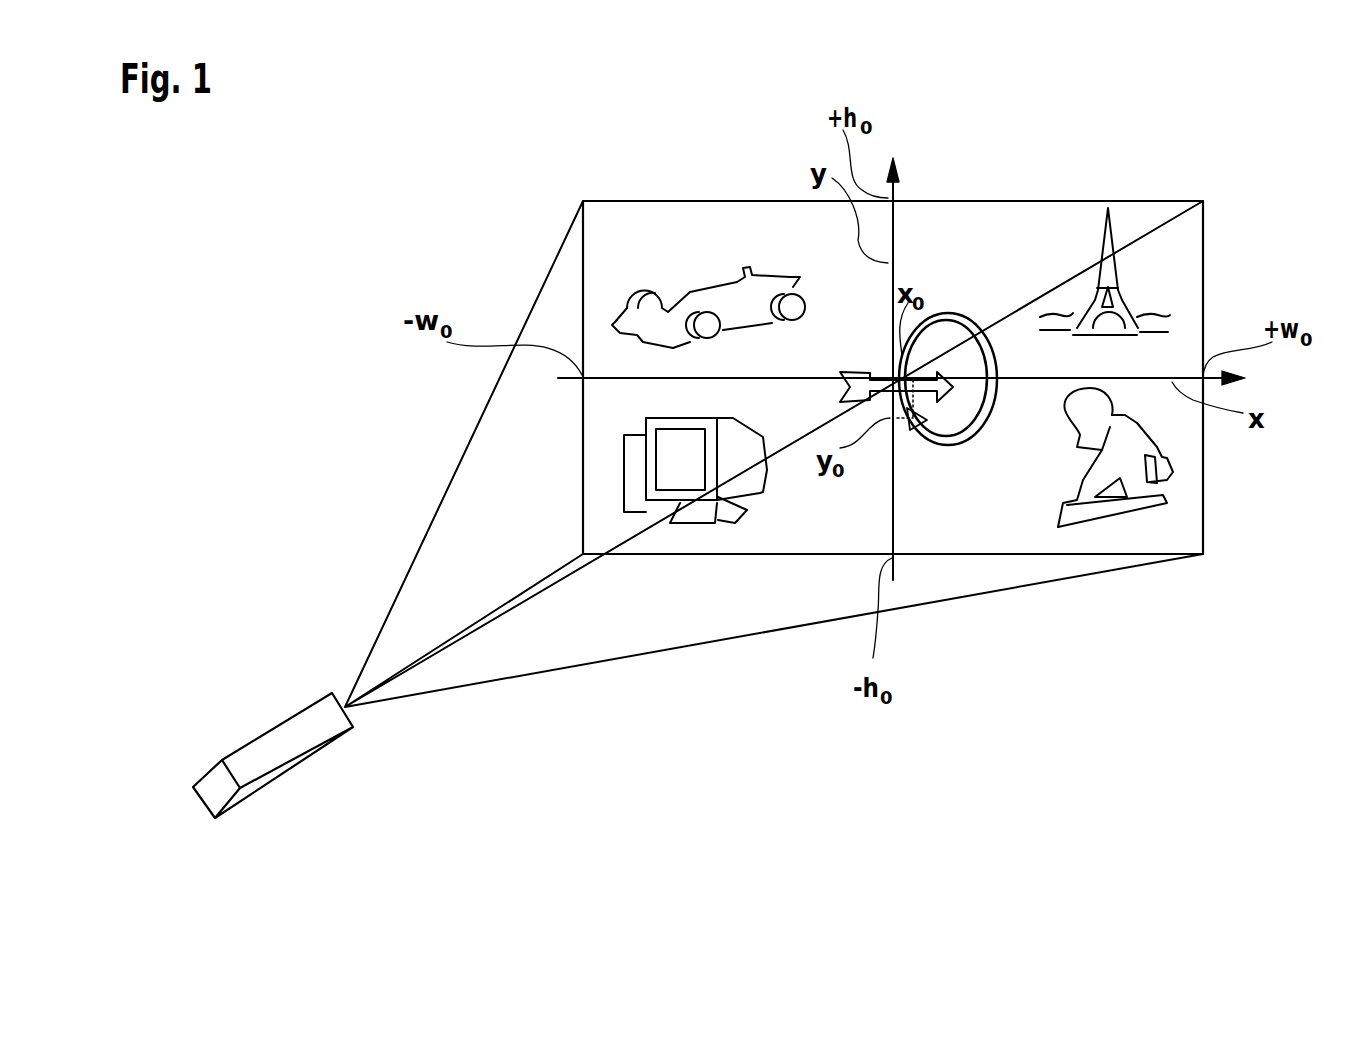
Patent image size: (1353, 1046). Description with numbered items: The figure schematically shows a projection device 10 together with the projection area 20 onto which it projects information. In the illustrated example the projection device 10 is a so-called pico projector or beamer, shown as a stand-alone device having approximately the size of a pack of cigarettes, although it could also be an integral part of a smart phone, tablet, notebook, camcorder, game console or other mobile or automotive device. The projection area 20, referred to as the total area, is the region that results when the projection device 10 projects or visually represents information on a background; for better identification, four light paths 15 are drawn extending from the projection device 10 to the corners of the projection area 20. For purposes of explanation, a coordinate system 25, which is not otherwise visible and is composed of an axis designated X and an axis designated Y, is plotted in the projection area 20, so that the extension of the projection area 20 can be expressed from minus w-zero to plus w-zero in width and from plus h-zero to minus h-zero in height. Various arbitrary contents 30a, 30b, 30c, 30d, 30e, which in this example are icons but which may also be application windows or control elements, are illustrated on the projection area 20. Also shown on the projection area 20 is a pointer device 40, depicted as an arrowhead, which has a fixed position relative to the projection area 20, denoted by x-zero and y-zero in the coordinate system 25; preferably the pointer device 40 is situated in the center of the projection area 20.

The projection device 10 is at (288, 750).
The light paths 15 is at (405, 573).
The projection area 20 is at (1057, 200).
The coordinate system 25 is at (918, 180).
The content 30a is at (713, 517).
The content 30b is at (1140, 490).
The content 30c is at (1110, 275).
The content 30d is at (717, 297).
The content 30e is at (945, 330).
The pointer device 40 is at (913, 430).